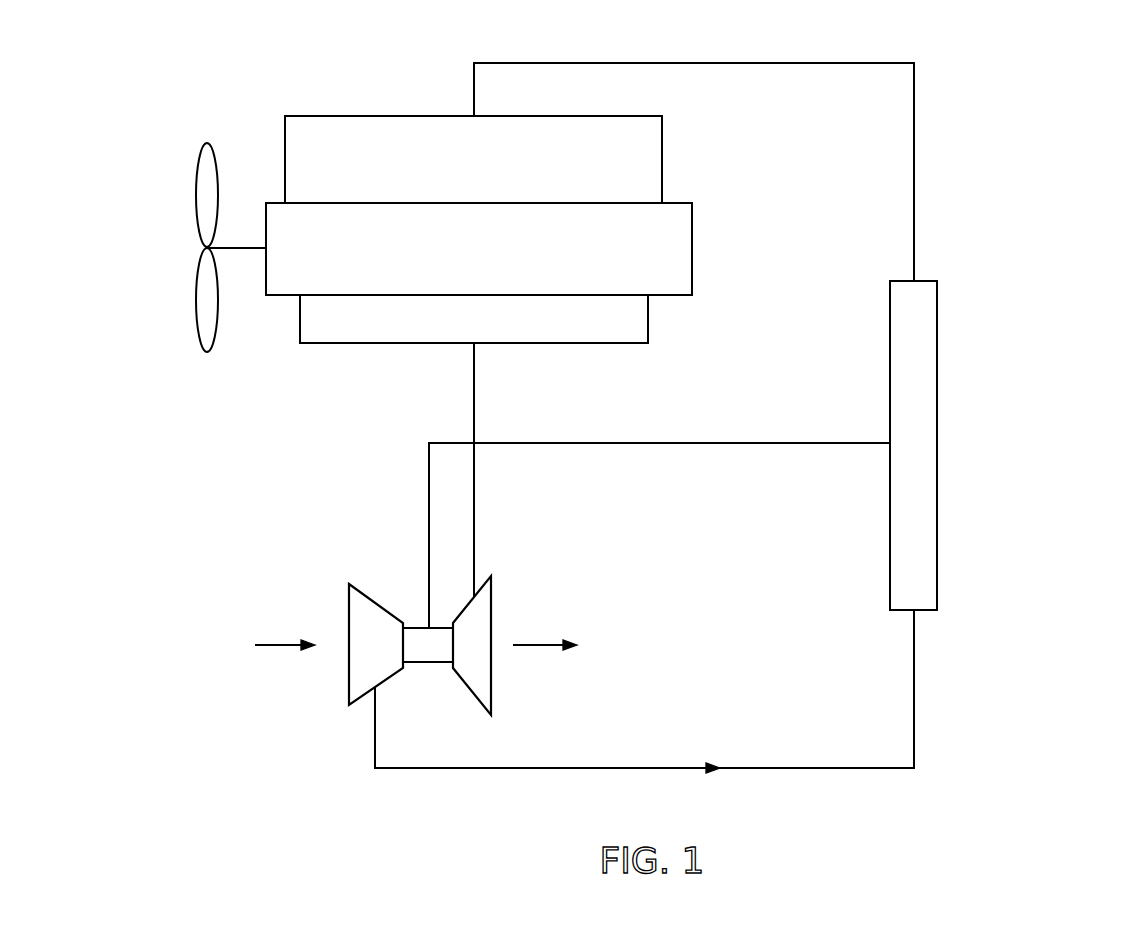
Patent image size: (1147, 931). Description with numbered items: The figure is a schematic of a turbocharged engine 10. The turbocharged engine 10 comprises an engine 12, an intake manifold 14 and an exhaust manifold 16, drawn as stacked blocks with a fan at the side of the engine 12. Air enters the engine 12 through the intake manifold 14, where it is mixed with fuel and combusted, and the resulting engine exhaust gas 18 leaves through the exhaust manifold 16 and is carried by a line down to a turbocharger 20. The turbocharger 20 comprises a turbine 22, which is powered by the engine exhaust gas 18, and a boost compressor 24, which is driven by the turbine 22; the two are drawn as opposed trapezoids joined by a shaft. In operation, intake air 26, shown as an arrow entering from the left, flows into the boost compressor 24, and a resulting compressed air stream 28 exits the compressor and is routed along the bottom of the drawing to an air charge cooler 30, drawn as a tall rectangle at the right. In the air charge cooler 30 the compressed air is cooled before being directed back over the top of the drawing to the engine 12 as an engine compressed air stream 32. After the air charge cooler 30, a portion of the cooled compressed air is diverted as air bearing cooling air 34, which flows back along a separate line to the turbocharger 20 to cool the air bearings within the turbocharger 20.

The turbocharged engine 10 is at (1012, 162).
The engine 12 is at (283, 297).
The intake manifold 14 is at (333, 118).
The exhaust manifold 16 is at (335, 343).
The engine exhaust gas 18 is at (474, 400).
The turbocharger 20 is at (407, 699).
The turbine 22 is at (488, 609).
The boost compressor 24 is at (349, 673).
The intake air 26 is at (276, 645).
The compressed air stream 28 is at (605, 768).
The air charge cooler 30 is at (890, 360).
The engine compressed air stream 32 is at (808, 63).
The air bearing cooling air 34 is at (700, 443).